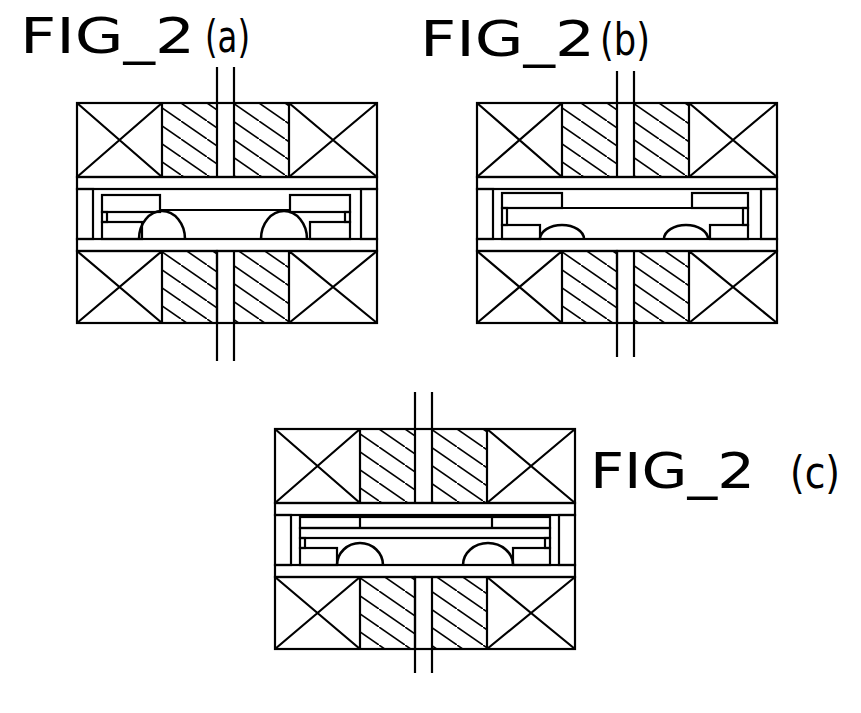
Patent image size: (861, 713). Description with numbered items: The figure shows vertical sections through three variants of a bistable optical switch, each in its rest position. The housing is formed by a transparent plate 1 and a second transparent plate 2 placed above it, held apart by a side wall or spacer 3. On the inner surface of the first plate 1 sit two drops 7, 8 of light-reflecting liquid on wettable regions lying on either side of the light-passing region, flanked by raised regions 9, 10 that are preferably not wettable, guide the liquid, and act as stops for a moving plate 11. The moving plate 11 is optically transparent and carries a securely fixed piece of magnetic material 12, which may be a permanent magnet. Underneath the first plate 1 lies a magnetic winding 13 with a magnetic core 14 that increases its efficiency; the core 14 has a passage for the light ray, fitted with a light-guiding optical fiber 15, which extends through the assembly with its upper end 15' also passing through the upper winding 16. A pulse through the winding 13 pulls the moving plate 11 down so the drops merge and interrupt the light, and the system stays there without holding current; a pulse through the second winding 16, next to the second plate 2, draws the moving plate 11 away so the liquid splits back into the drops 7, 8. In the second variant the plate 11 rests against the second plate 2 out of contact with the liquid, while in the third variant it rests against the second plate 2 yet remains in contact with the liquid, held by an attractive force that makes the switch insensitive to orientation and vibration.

In FIG. 2A, the transparent plate 1 is at (203, 252).
In FIG. 2B, the transparent plate 1 is at (611, 250).
In FIG. 2C, the transparent plate 1 is at (406, 576).
In FIG. 2A, the second transparent plate 2 is at (208, 165).
In FIG. 2B, the second transparent plate 2 is at (608, 164).
In FIG. 2C, the second transparent plate 2 is at (406, 493).
In FIG. 2A, the side wall or spacer 3 is at (207, 214).
In FIG. 2B, the side wall or spacer 3 is at (608, 214).
In FIG. 2C, the side wall or spacer 3 is at (405, 538).
In FIG. 2B, the drop of liquid 7 is at (570, 218).
In FIG. 2C, the drop of liquid 7 is at (372, 550).
In FIG. 2B, the drop of liquid 8 is at (674, 219).
In FIG. 2C, the drop of liquid 8 is at (474, 554).
In FIG. 2A, the raised region 9 is at (122, 252).
In FIG. 2B, the raised region 9 is at (521, 254).
In FIG. 2C, the raised region 9 is at (318, 578).
In FIG. 2A, the raised region 10 is at (330, 253).
In FIG. 2B, the raised region 10 is at (733, 256).
In FIG. 2C, the raised region 10 is at (535, 580).
In FIG. 2A, the moving plate 11 is at (352, 219).
In FIG. 2C, the moving plate 11 is at (465, 535).
In FIG. 2A, the piece of magnetic material 12 is at (131, 181).
In FIG. 2B, the piece of magnetic material 12 is at (532, 182).
In FIG. 2C, the piece of magnetic material 12 is at (427, 508).
In FIG. 2A, the magnetic winding 13 is at (145, 310).
In FIG. 2B, the magnetic winding 13 is at (546, 307).
In FIG. 2C, the magnetic winding 13 is at (344, 632).
In FIG. 2A, the magnetic core 14 is at (297, 310).
In FIG. 2B, the magnetic core 14 is at (697, 308).
In FIG. 2C, the magnetic core 14 is at (495, 632).
In FIG. 2A, the light-guiding optical fiber 15 is at (201, 346).
In FIG. 2B, the light-guiding optical fiber 15 is at (608, 344).
In FIG. 2C, the light-guiding optical fiber 15 is at (400, 668).
In FIG. 2A, the upper shaft end 15' is at (253, 77).
In FIG. 2B, the upper shaft end 15' is at (656, 77).
In FIG. 2C, the upper shaft end 15' is at (452, 406).
In FIG. 2A, the second winding 16 is at (226, 117).
In FIG. 2B, the second winding 16 is at (626, 116).
In FIG. 2C, the second winding 16 is at (423, 443).